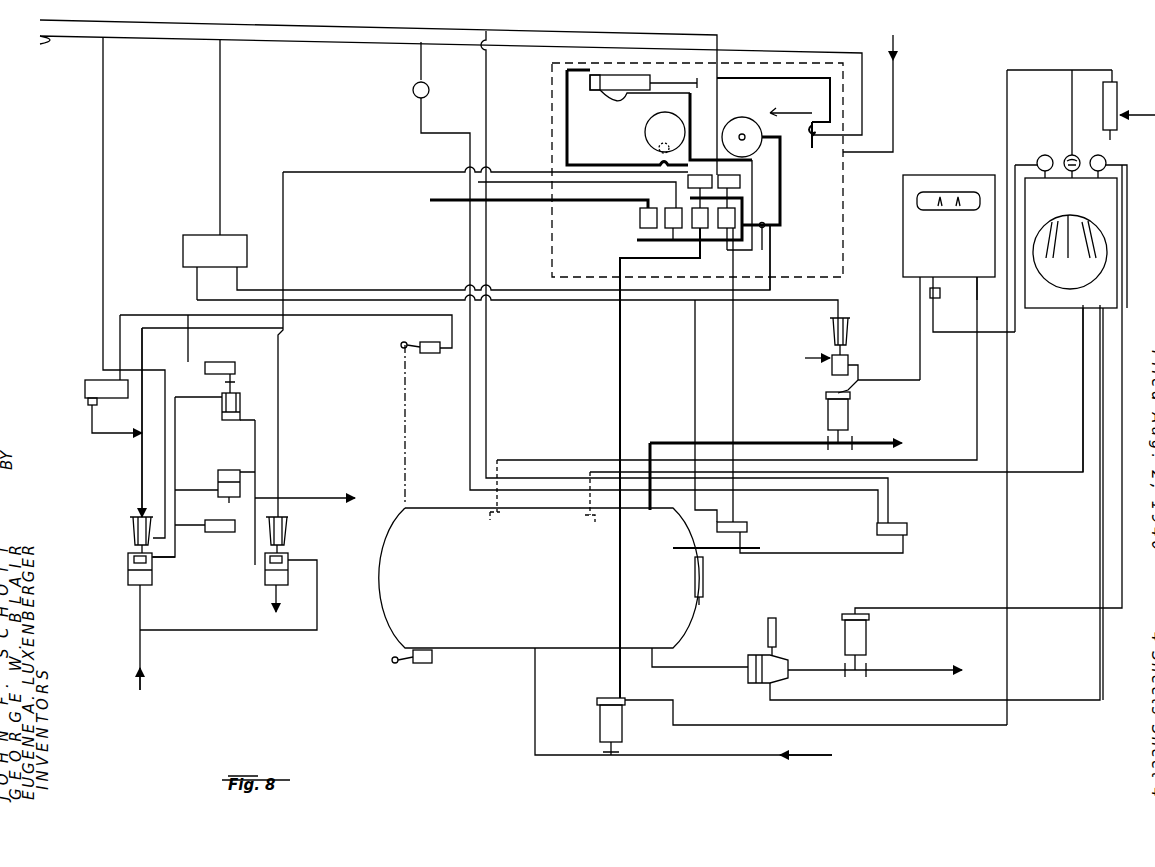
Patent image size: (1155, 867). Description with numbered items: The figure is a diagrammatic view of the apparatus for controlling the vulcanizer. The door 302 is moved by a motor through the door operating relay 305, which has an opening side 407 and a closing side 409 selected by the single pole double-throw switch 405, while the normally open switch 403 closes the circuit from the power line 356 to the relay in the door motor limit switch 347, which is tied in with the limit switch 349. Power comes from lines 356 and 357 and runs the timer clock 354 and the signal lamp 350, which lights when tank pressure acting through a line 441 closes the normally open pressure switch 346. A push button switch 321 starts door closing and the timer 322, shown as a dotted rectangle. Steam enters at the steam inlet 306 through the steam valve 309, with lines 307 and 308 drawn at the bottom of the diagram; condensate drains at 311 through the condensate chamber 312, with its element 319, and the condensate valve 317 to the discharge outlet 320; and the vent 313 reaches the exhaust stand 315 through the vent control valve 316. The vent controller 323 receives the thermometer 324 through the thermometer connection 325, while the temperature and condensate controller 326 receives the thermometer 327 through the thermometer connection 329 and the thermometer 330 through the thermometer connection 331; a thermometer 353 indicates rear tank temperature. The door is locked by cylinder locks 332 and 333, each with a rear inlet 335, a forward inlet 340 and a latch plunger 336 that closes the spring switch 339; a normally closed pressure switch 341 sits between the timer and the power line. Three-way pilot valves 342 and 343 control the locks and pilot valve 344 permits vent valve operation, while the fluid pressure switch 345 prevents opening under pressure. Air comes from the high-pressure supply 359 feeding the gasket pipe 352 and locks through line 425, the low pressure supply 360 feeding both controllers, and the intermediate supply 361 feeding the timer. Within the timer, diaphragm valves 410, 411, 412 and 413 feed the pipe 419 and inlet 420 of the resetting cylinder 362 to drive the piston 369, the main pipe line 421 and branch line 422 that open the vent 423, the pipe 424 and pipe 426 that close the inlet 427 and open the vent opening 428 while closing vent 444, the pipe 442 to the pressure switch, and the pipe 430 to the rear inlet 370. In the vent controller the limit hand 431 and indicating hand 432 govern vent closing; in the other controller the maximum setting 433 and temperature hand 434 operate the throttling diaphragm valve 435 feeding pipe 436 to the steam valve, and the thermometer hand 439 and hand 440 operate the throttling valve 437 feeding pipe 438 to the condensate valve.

The door 302 is at (403, 455).
The door operating relay 305 is at (192, 240).
The steam inlet 306 is at (540, 650).
The outlet line 307 is at (822, 757).
The line 308 is at (668, 758).
The steam valve 309 is at (622, 733).
The condensate drain 311 is at (650, 662).
The condensate chamber 312 is at (750, 683).
The vent 313 is at (650, 510).
The exhaust stand 315 is at (878, 436).
The vent control valve 316 is at (850, 410).
The condensate valve 317 is at (866, 637).
The gauge 319 is at (812, 660).
The discharge outlet 320 is at (882, 660).
The push button switch 321 is at (862, 102).
The timer 322 is at (550, 255).
The vent controller 323 is at (942, 175).
The thermometer 324 is at (490, 522).
The thermometer connection 325 is at (528, 460).
The temperature and condensate controller 326 is at (1042, 310).
The thermometer 327 is at (590, 525).
The thermometer connection 329 is at (960, 474).
The thermometer 330 is at (780, 686).
The thermometer connection 331 is at (1060, 694).
The cylinder lock 332 is at (240, 405).
The cylinder lock 333 is at (218, 488).
The rear inlet 335 is at (244, 422).
The latch plunger 336 is at (232, 388).
The spring switch 339 is at (208, 360).
The forward inlet 340 is at (187, 468).
The pressure switch 341 is at (85, 390).
The three-way pilot valve 342 is at (214, 532).
The three-way pilot valve 343 is at (265, 593).
The three-way pilot valve 344 is at (850, 335).
The fluid pressure switch 345 is at (748, 526).
The pressure switch 346 is at (898, 523).
The door motor limit switch 347 is at (420, 650).
The limit switch 349 is at (438, 342).
The signal lamp 350 is at (430, 88).
The pipe 352 is at (305, 488).
The thermometer 353 is at (705, 587).
The timer clock 354 is at (659, 148).
The power line 356 is at (38, 24).
The power line 357 is at (44, 40).
The high-pressure air supply 359 is at (142, 678).
The low pressure air supply 360 is at (1135, 110).
The intermediate air supply 361 is at (896, 50).
The resetting cylinder 362 is at (640, 76).
The piston 369 is at (608, 96).
The rear inlet 370 is at (590, 74).
The switch 403 is at (688, 178).
The switch 405 is at (740, 182).
The opening side 407 is at (197, 298).
The closing side 409 is at (244, 270).
The diaphragm valve 410 is at (716, 246).
The diaphragm valve 411 is at (698, 238).
The diaphragm valve 412 is at (668, 238).
The diaphragm valve 413 is at (640, 224).
The pipe 419 is at (710, 108).
The inlet 420 is at (652, 116).
The main pipe line 421 is at (620, 362).
The branch line 422 is at (697, 304).
The vent 423 is at (806, 357).
The pipe 424 is at (315, 174).
The line 425 is at (256, 448).
The pipe 426 is at (128, 314).
The inlet 427 is at (140, 594).
The vent opening 428 is at (130, 528).
The pipe 430 is at (578, 202).
The limit hand 431 is at (959, 210).
The indicating hand 432 is at (939, 210).
The maximum setting 433 is at (1052, 236).
The temperature hand 434 is at (1056, 258).
The throttling diaphragm valve 435 is at (1046, 155).
The pipe 436 is at (1007, 386).
The throttling valve 437 is at (1103, 158).
The pipe 438 is at (1100, 510).
The thermometer hand 439 is at (1072, 216).
The hand 440 is at (1090, 226).
The line 441 is at (842, 552).
The pipe 442 is at (92, 420).
The vent 444 is at (293, 598).